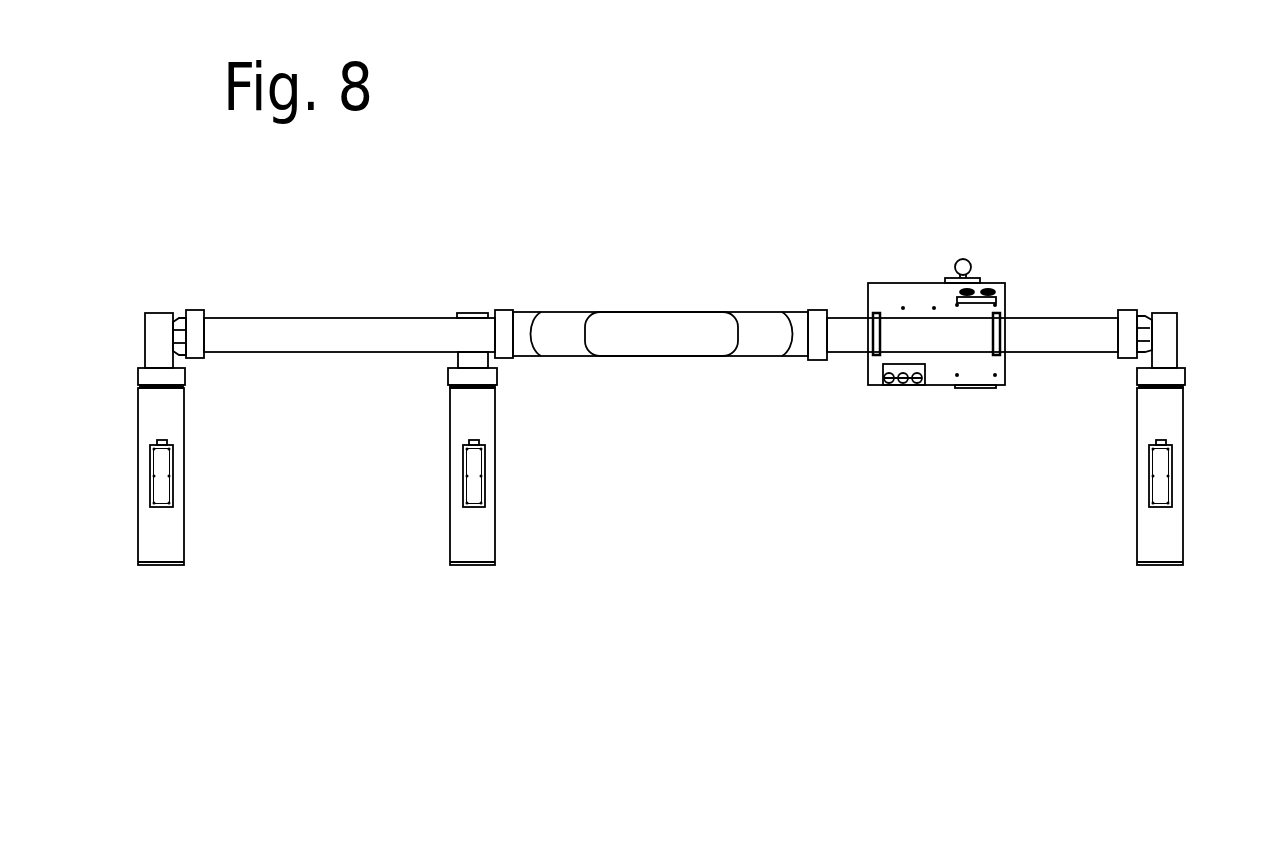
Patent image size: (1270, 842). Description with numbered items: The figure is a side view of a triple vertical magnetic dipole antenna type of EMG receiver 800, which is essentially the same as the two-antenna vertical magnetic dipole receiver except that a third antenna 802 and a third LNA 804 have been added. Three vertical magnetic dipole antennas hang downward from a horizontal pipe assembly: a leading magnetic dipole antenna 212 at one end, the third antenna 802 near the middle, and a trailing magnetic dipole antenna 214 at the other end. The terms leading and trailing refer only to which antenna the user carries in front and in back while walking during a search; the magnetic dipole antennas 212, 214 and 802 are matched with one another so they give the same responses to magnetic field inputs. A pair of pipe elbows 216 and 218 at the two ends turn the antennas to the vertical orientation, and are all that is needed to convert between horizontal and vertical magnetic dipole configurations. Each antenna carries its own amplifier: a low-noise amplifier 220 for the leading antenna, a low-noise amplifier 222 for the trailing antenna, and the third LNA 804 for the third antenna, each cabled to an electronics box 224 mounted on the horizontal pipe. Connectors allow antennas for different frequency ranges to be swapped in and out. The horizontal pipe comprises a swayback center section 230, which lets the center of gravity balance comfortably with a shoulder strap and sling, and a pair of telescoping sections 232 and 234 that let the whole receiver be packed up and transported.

The triple vertical magnetic dipole antenna type of EMG receiver 800 is at (690, 166).
The pipe elbow 216 is at (163, 312).
The pipe elbow 218 is at (1177, 318).
The telescoping section 232 is at (357, 318).
The swayback center section 230 is at (673, 314).
The telescoping section 234 is at (1075, 345).
The electronics box 224 is at (1005, 305).
The leading magnetic dipole antenna 212 is at (183, 443).
The low-noise amplifier 220 is at (150, 452).
The trailing magnetic dipole antenna 214 is at (1183, 437).
The low-noise amplifier 222 is at (1150, 497).
The third antenna 802 is at (495, 443).
The third LNA 804 is at (463, 452).